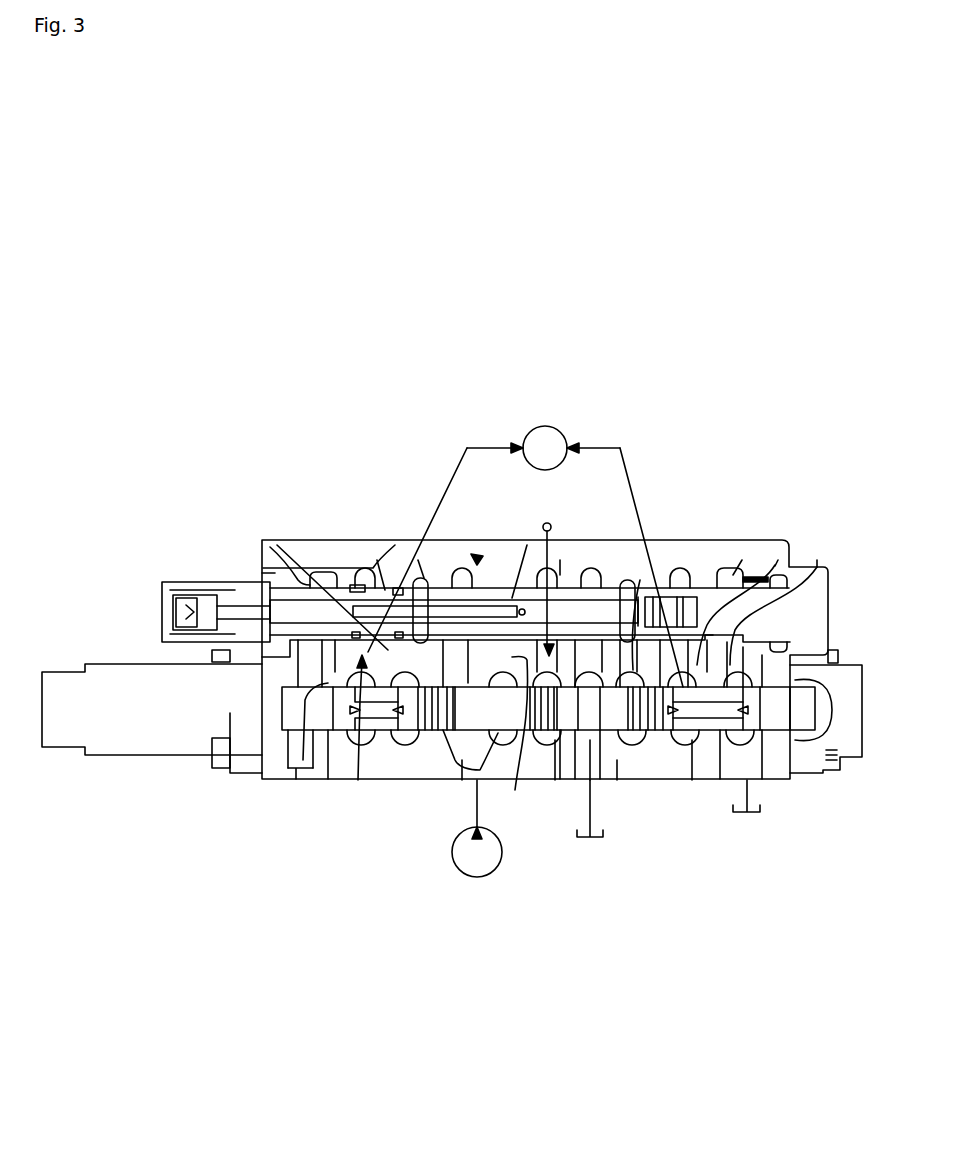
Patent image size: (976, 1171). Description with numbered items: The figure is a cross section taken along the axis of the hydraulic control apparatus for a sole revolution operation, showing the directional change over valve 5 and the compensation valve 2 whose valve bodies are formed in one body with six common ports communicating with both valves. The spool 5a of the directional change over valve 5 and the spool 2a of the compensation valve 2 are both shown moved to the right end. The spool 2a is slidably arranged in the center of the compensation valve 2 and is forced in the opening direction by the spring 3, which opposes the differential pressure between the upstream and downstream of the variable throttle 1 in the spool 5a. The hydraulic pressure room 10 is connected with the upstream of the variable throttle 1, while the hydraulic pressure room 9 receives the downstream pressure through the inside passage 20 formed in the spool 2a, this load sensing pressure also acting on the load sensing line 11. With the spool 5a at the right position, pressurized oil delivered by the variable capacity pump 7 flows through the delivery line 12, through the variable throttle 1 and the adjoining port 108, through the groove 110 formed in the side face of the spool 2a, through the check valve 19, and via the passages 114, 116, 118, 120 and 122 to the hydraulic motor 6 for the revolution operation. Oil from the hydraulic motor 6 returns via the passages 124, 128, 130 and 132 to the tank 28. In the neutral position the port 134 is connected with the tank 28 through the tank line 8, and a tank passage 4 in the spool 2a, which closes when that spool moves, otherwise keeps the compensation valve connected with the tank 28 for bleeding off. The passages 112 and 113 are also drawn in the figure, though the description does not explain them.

The variable throttle 1 is at (507, 683).
The compensation valve 2 is at (640, 590).
The spool of the compensation valve 2a is at (418, 560).
The spring 3 is at (372, 600).
The tank passage 4 is at (630, 580).
The directional change over valve 5 is at (770, 755).
The spool of the directional change over valve 5a is at (238, 582).
The hydraulic motor 6 is at (545, 425).
The variable capacity pump 7 is at (477, 877).
The tank line 8 is at (595, 815).
The hydraulic pressure room 9 is at (690, 592).
The hydraulic pressure room 10 is at (742, 560).
The load sensing line 11 is at (377, 560).
The delivery line 12 is at (462, 780).
The check valve 19 is at (560, 560).
The inside passage 20 is at (640, 580).
The tank 28 is at (592, 840).
The port 108 is at (515, 790).
The groove 110 is at (557, 780).
The pilot pressure passage 112 is at (551, 523).
The passage 113 is at (478, 557).
The passage 114 is at (527, 545).
The passage 116 is at (277, 545).
The passage 118 is at (358, 780).
The passage 120 is at (303, 760).
The passage 122 is at (494, 447).
The passage 124 is at (612, 447).
The passage 128 is at (778, 560).
The passage 130 is at (692, 780).
The passage 132 is at (817, 560).
The port 134 is at (617, 780).